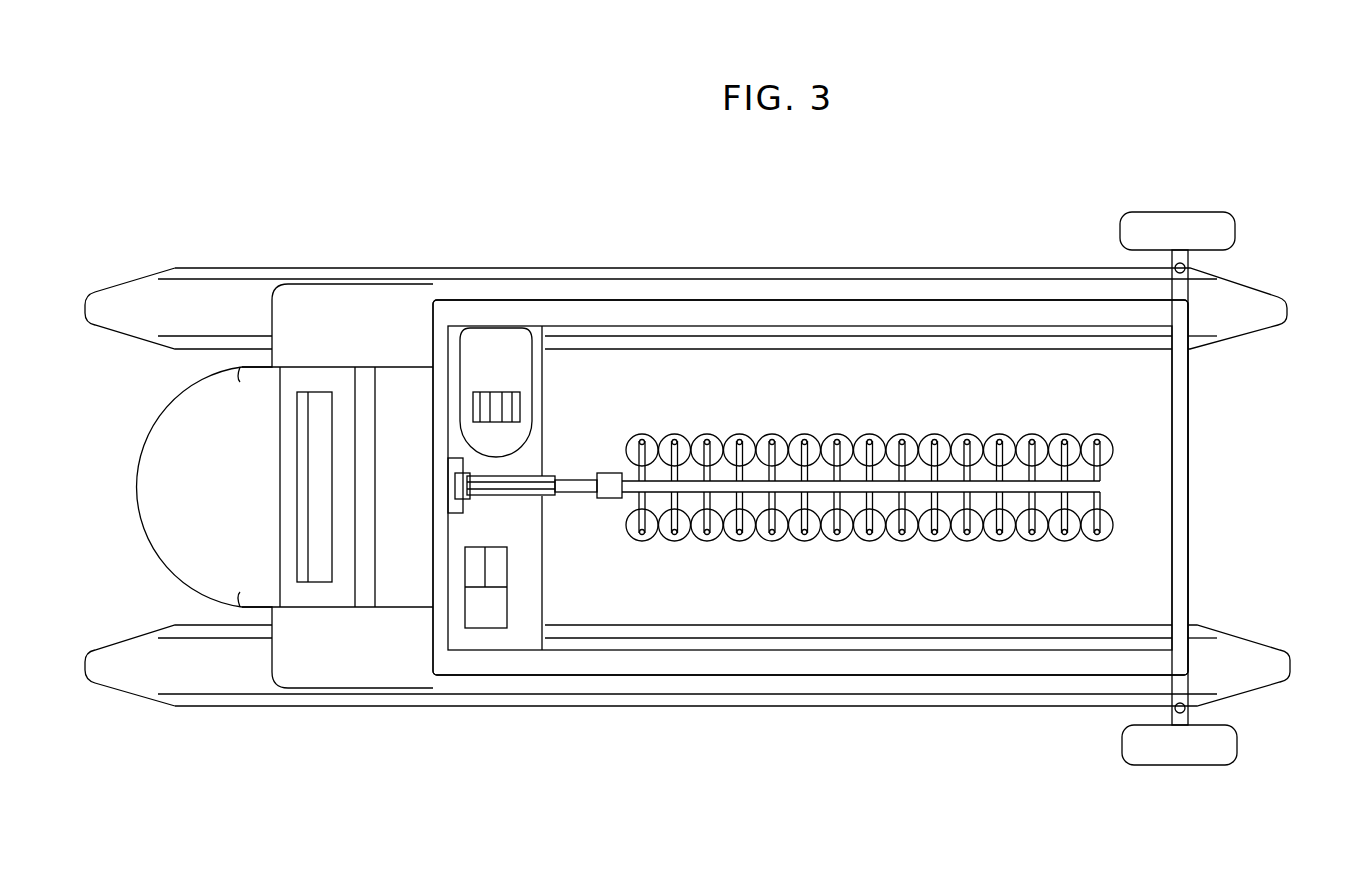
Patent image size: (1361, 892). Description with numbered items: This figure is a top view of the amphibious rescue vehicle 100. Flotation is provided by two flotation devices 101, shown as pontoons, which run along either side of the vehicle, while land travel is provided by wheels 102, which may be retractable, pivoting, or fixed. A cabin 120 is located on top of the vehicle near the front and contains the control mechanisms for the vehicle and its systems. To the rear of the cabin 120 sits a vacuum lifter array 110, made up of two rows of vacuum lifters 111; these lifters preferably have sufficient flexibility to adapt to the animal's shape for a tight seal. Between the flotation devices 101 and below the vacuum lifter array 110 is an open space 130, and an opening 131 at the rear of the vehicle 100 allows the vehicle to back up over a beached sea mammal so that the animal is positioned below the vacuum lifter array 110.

The amphibious rescue vehicle 100 is at (676, 212).
The flotation device 101 is at (972, 290).
The wheel 102 is at (1225, 750).
The vacuum lifter array 110 is at (786, 422).
The vacuum lifter 111 is at (1003, 435).
The cabin 120 is at (347, 390).
The open space 130 is at (882, 597).
The opening 131 is at (1208, 442).